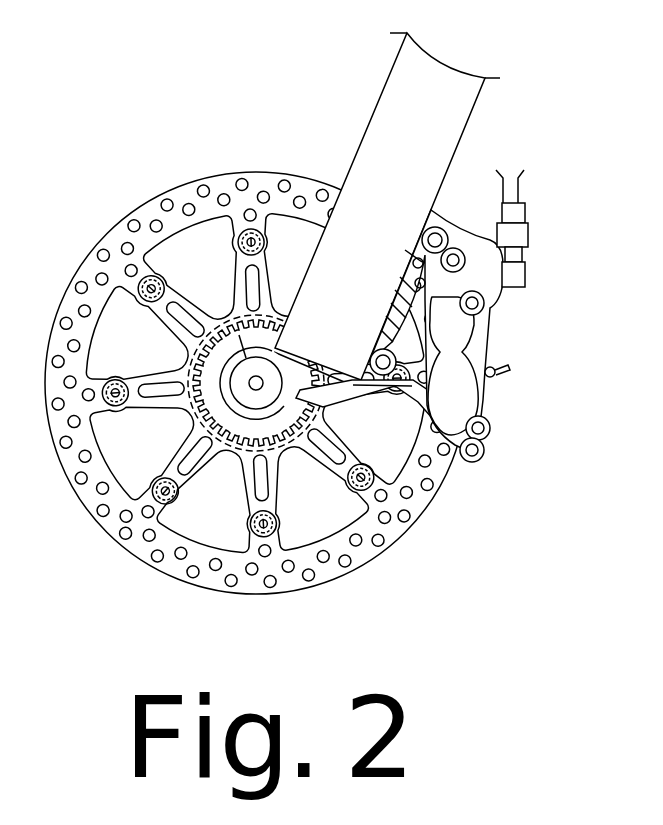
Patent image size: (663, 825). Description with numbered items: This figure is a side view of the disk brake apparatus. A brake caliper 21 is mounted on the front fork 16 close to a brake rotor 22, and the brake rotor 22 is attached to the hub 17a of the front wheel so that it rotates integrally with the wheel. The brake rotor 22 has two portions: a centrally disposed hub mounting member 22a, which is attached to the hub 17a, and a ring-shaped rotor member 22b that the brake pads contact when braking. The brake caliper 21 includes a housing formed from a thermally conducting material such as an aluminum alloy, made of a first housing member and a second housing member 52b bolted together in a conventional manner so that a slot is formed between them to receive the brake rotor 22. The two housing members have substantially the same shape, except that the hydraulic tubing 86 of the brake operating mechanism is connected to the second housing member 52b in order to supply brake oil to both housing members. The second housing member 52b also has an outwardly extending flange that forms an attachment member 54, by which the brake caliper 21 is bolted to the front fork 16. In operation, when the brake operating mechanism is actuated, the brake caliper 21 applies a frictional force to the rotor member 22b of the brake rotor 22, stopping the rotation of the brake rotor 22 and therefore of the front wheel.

The front fork 16 is at (382, 102).
The brake rotor 22 is at (257, 383).
The hub mounting member 22a is at (193, 418).
The rotor member 22b is at (112, 522).
The hub 17a is at (195, 363).
The attachment member 54 is at (392, 337).
The brake caliper 21 is at (471, 336).
The second housing member 52b is at (475, 377).
The hydraulic tubing 86 is at (520, 183).